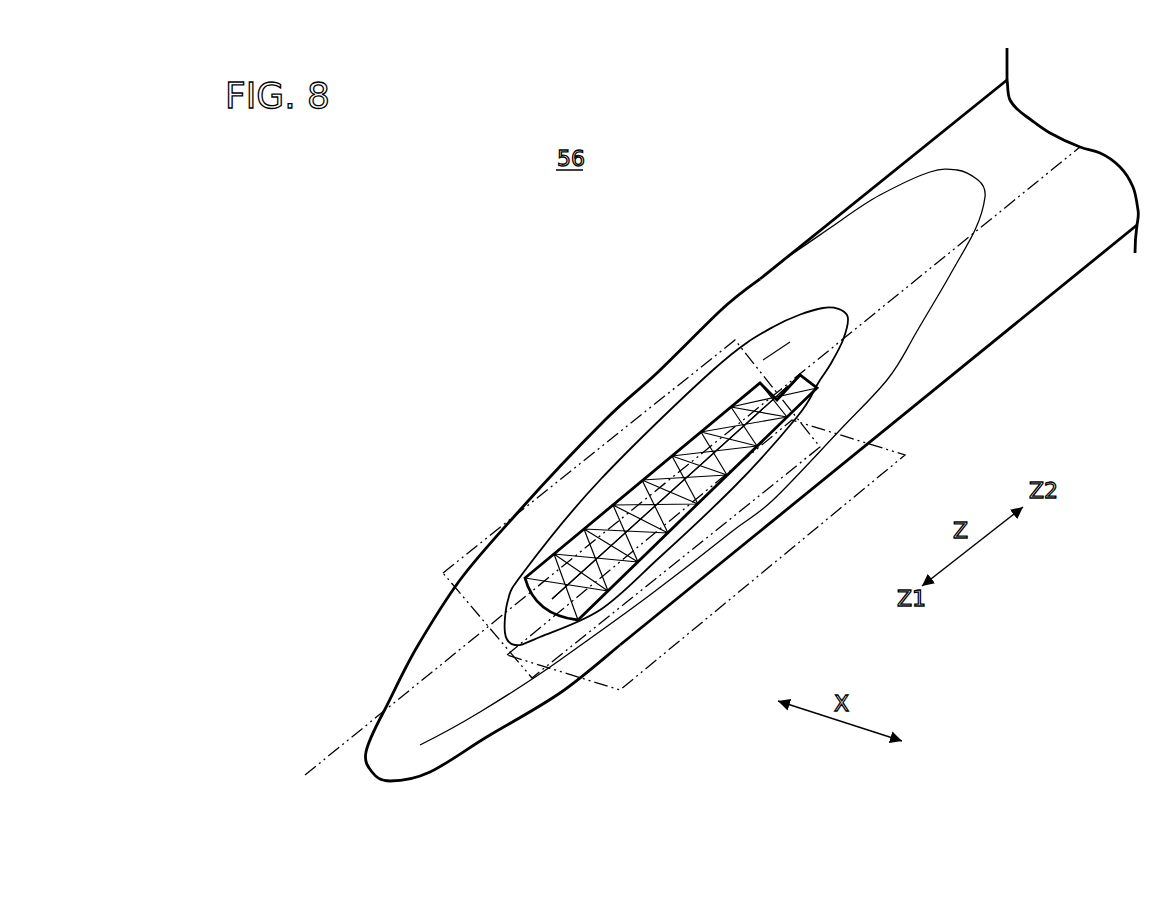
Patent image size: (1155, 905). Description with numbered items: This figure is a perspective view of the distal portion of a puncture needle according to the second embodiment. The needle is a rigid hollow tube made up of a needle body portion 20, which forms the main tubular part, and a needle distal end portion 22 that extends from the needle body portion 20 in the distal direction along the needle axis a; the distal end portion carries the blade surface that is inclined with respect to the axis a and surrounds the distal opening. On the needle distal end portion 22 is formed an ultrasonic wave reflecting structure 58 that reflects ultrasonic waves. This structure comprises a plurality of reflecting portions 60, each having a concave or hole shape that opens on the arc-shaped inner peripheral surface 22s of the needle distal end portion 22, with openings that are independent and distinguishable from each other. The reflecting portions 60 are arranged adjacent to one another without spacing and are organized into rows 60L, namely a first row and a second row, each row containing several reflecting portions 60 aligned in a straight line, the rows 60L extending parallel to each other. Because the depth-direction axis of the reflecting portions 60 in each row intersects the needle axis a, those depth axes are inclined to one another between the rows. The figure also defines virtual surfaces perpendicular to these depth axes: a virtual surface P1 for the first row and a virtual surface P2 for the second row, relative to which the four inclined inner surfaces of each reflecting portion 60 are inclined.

The needle body portion 20 is at (934, 135).
The needle distal end portion 22 is at (602, 416).
The inner peripheral surface 22s is at (807, 340).
The ultrasonic wave reflecting structure 58 is at (636, 438).
The reflecting portion 60 is at (666, 446).
The row 60L is at (736, 398).
The virtual surface P1 is at (595, 447).
The virtual surface P2 is at (653, 665).
The axis a is at (681, 474).